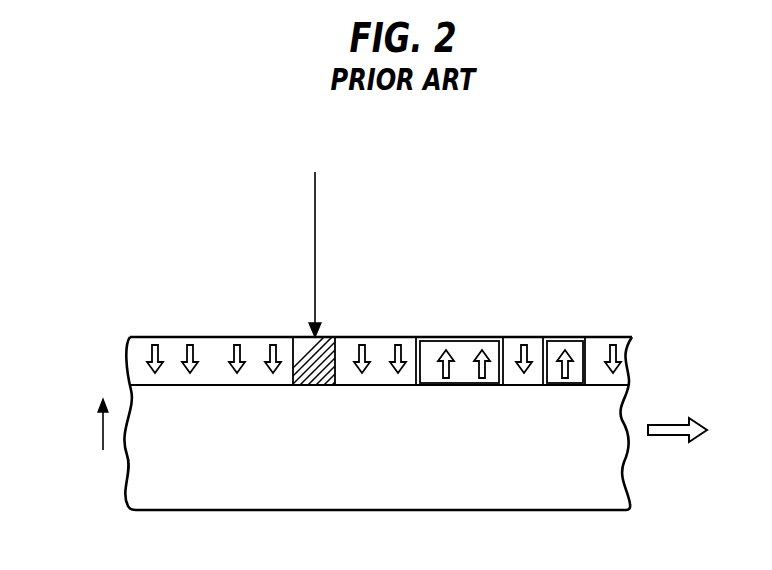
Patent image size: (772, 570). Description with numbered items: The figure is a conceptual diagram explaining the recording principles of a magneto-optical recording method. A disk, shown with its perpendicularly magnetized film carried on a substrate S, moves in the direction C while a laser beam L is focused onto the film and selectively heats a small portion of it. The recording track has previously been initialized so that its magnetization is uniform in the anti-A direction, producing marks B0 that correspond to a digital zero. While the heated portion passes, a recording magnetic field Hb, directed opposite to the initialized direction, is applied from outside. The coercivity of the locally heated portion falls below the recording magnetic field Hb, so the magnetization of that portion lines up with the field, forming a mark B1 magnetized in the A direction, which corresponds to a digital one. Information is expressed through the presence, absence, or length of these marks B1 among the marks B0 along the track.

The laser beam L is at (315, 238).
The mark magnetized in the anti-A direction B0 is at (380, 333).
The mark magnetized in the A direction B1 is at (458, 333).
The recording magnetic field Hb is at (85, 424).
The direction of disk movement C is at (687, 432).
The substrate S is at (522, 493).